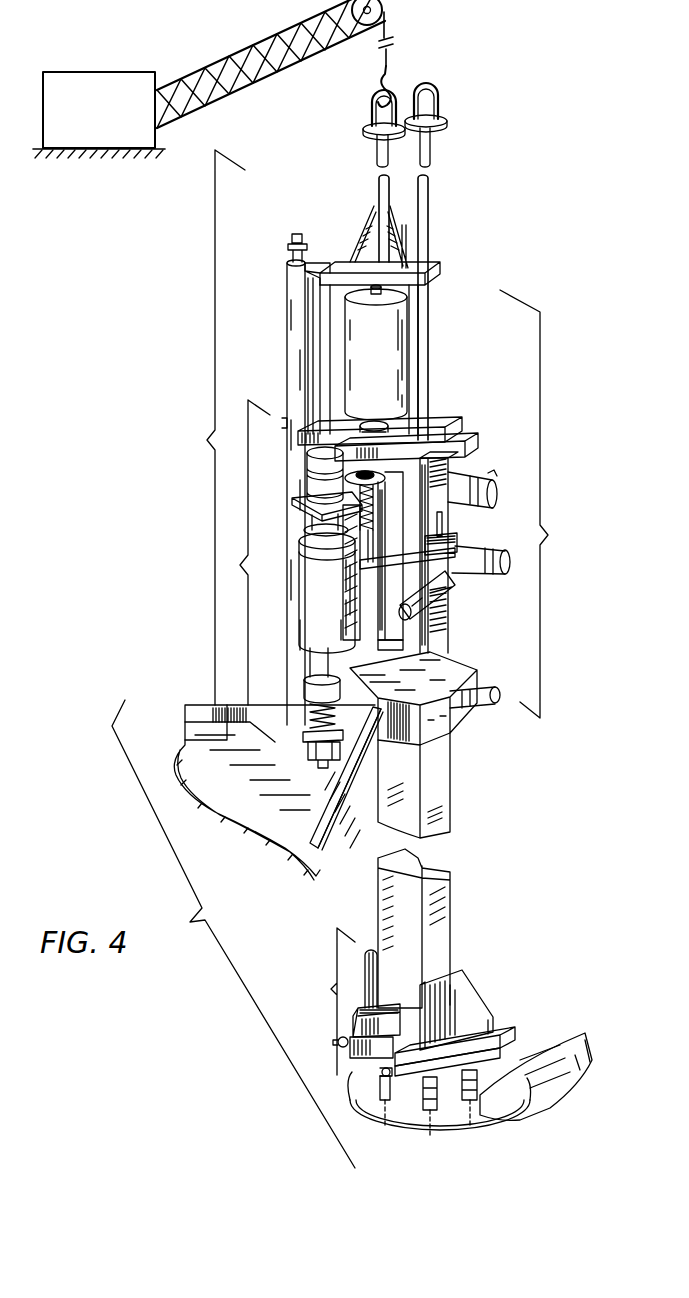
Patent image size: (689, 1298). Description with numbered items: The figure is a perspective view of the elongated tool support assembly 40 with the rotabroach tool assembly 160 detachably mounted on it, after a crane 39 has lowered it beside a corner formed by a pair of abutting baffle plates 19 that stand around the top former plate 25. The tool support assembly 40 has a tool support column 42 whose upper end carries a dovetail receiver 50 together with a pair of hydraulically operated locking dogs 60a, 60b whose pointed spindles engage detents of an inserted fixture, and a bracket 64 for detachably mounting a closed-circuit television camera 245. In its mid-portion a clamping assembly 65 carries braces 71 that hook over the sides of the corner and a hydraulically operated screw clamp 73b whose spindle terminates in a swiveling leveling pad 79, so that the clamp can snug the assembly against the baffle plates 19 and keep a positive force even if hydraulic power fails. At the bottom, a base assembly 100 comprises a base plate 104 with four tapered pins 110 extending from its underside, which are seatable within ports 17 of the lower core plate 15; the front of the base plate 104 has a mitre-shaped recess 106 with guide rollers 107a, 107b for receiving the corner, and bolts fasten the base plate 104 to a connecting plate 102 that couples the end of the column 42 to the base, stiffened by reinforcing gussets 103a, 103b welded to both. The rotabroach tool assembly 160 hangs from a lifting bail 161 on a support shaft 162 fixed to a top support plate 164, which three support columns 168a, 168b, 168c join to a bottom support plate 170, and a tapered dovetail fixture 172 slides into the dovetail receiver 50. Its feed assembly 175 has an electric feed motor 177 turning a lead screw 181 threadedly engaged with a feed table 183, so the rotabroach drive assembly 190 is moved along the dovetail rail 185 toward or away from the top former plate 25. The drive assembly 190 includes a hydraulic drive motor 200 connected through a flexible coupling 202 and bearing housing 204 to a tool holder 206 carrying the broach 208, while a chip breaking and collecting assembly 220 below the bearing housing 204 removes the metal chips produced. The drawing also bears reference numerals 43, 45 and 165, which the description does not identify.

The crane 39 is at (86, 135).
The lifting bail 161 is at (371, 104).
The support shaft 162 is at (373, 152).
The lifting eye 43 is at (440, 97).
The rod 45 is at (430, 215).
The top support plate 164 is at (377, 252).
The gusset bracket 165 is at (390, 226).
The support column 168a is at (345, 256).
The support column 168b is at (325, 296).
The support column 168c is at (413, 347).
The chip breaking and collecting assembly 220 is at (294, 360).
The electric feed motor 177 is at (345, 342).
The lead screw 181 is at (383, 430).
The bottom support plate 170 is at (400, 445).
The dovetail fixture 172 is at (440, 456).
The locking dog 60a is at (486, 477).
The bracket 64 is at (452, 538).
The locking dog 60b is at (492, 559).
The closed-circuit television camera 245 is at (448, 593).
The dovetail receiver 50 is at (454, 602).
The dovetail rail 185 is at (396, 633).
The clamping assembly 65 is at (452, 673).
The screw clamp 73b is at (488, 704).
The tool support column 42 is at (440, 763).
The tool support assembly 40 is at (447, 873).
The baffle plate 19 is at (203, 705).
The top former plate 25 is at (262, 807).
The broach 208 is at (305, 742).
The brace 71 is at (330, 760).
The leveling pad 79 is at (370, 740).
The rotabroach tool assembly 160 is at (204, 427).
The rotabroach drive assembly 190 is at (240, 552).
The feed assembly 175 is at (542, 504).
The hydraulic drive motor 200 is at (322, 500).
The flexible coupling 202 is at (318, 549).
The bearing housing 204 is at (312, 603).
The tool holder 206 is at (320, 660).
The feed table 183 is at (373, 555).
The reinforcing gusset 103a is at (366, 968).
The base assembly 100 is at (325, 1001).
The mitre-shaped recess 106 is at (368, 1043).
The guide roller 107a is at (339, 1046).
The guide roller 107b is at (382, 1074).
The port 17 is at (380, 1093).
The tapered pin 110 is at (398, 1118).
The lower core plate 15 is at (478, 1130).
The connecting plate 102 is at (500, 1032).
The base plate 104 is at (498, 1052).
The reinforcing gusset 103b is at (480, 1011).